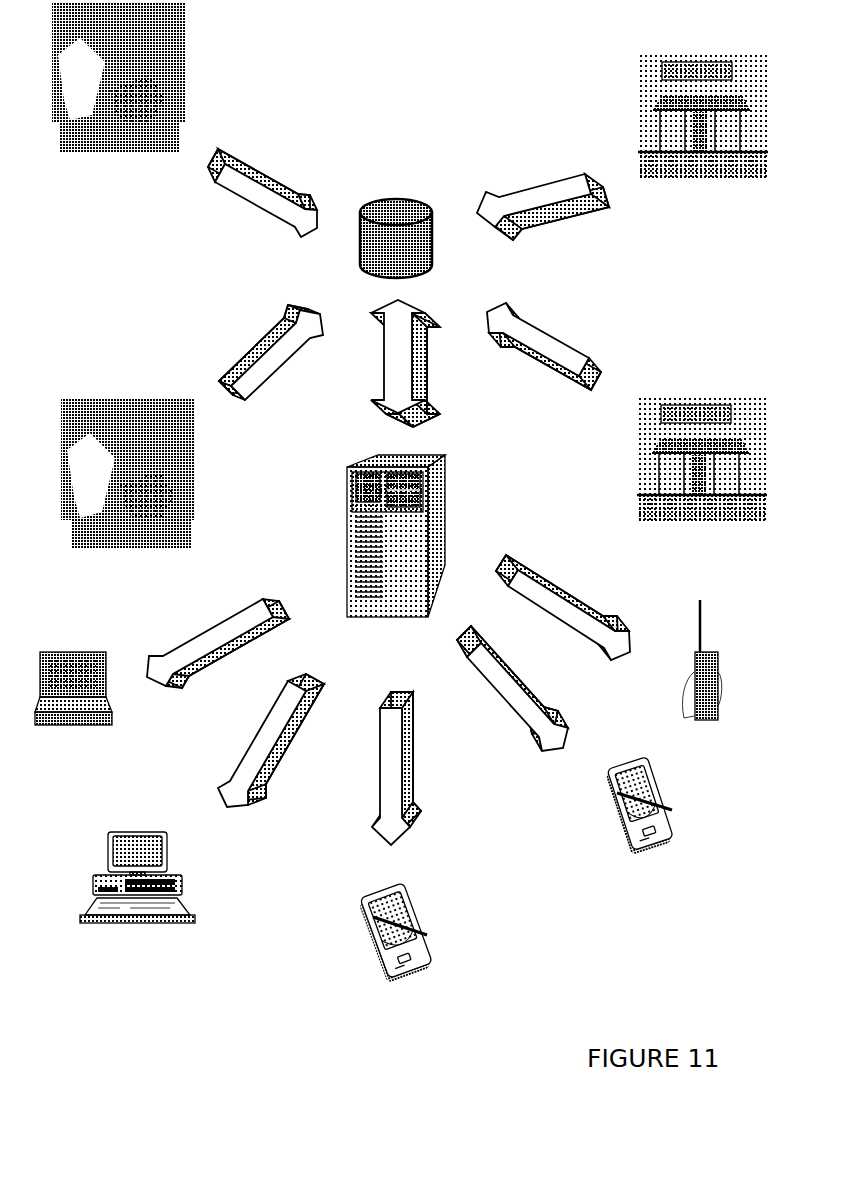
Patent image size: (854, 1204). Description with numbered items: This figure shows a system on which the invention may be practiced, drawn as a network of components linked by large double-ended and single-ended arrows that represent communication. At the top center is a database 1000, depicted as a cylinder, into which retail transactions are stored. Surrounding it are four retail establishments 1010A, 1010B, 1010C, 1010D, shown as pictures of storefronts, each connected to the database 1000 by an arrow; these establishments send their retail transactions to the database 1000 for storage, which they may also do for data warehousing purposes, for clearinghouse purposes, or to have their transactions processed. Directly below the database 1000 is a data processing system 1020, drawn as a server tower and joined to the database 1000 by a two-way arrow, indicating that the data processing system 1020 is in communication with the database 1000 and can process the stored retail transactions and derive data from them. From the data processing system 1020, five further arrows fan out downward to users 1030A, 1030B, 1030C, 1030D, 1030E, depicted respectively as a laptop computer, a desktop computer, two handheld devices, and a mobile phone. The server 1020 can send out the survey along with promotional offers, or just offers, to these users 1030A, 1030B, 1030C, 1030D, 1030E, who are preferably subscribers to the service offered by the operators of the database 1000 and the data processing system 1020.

The database 1000 is at (396, 197).
The retail establishment 1010A is at (188, 78).
The retail establishment 1010B is at (638, 80).
The retail establishment 1010C is at (92, 397).
The retail establishment 1010D is at (702, 390).
The data processing system 1020 is at (448, 494).
The user 1030A is at (72, 727).
The user 1030B is at (135, 923).
The user 1030C is at (424, 918).
The user 1030D is at (638, 853).
The user 1030E is at (725, 692).